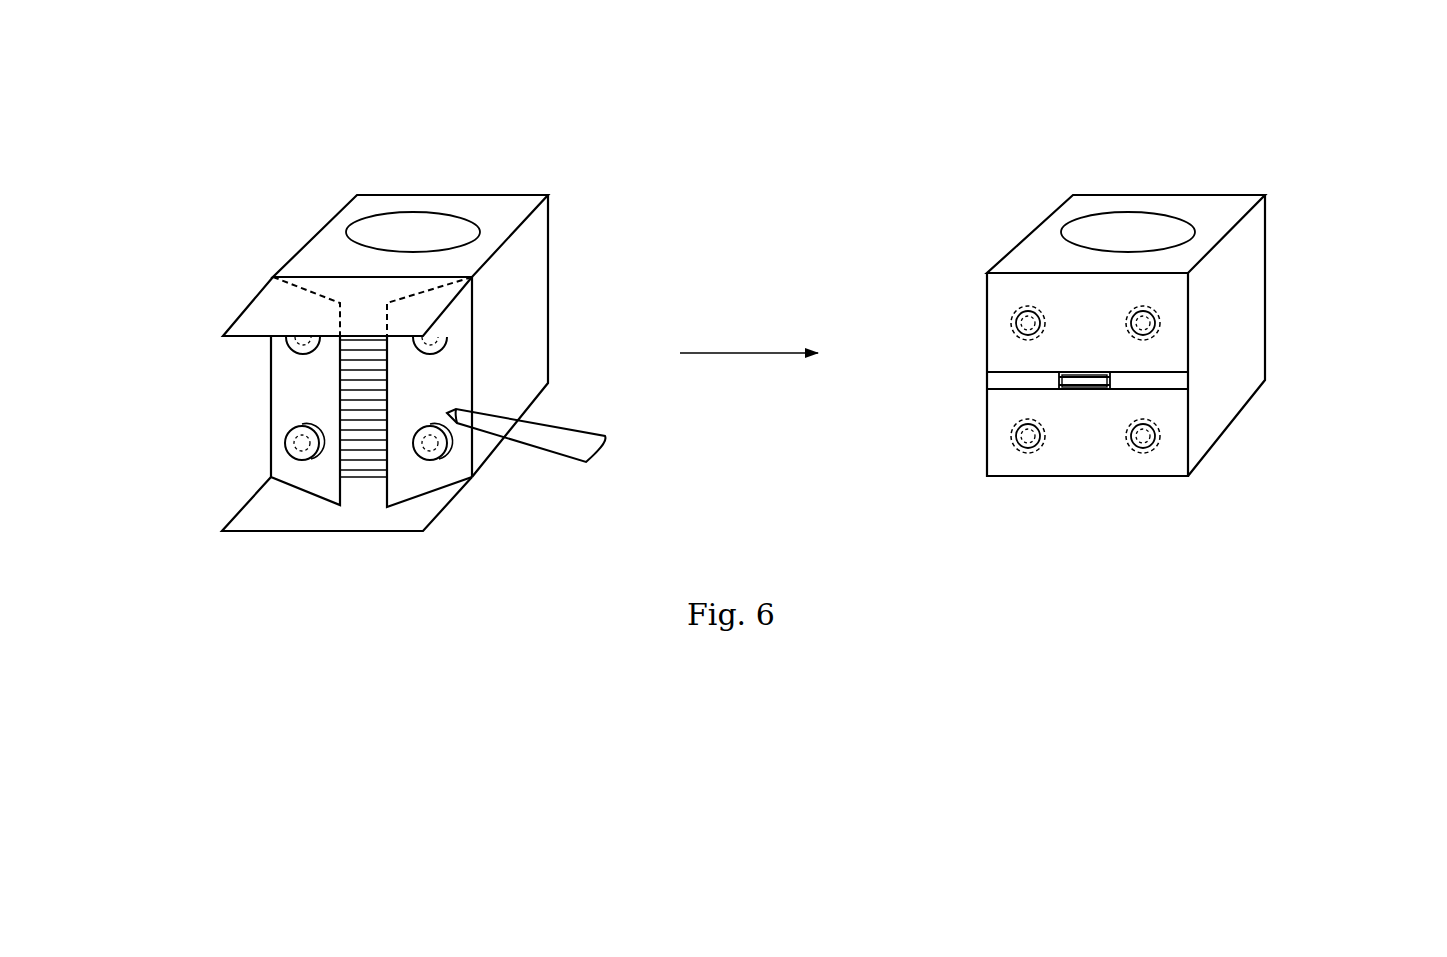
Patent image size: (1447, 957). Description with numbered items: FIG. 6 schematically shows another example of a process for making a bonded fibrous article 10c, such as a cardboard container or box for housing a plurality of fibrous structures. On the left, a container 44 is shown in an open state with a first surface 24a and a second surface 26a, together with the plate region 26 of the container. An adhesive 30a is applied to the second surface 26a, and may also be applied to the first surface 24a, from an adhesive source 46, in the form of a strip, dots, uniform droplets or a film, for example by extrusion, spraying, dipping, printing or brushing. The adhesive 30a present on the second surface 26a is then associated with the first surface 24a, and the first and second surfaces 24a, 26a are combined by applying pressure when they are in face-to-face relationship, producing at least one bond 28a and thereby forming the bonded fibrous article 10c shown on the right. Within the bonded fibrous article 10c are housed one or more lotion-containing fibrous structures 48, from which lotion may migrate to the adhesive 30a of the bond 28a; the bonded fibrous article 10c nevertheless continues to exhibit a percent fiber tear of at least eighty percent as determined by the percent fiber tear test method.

The bonded fibrous article 10c is at (1302, 133).
The container 44 is at (529, 172).
The adhesive source 46 is at (573, 442).
The lotion-containing fibrous structures 48 is at (357, 449).
The first surface 24a is at (236, 344).
The first plate 26 is at (317, 393).
The second surface 26a is at (449, 393).
The bond 28a is at (1012, 324).
The adhesive 30a is at (432, 340).